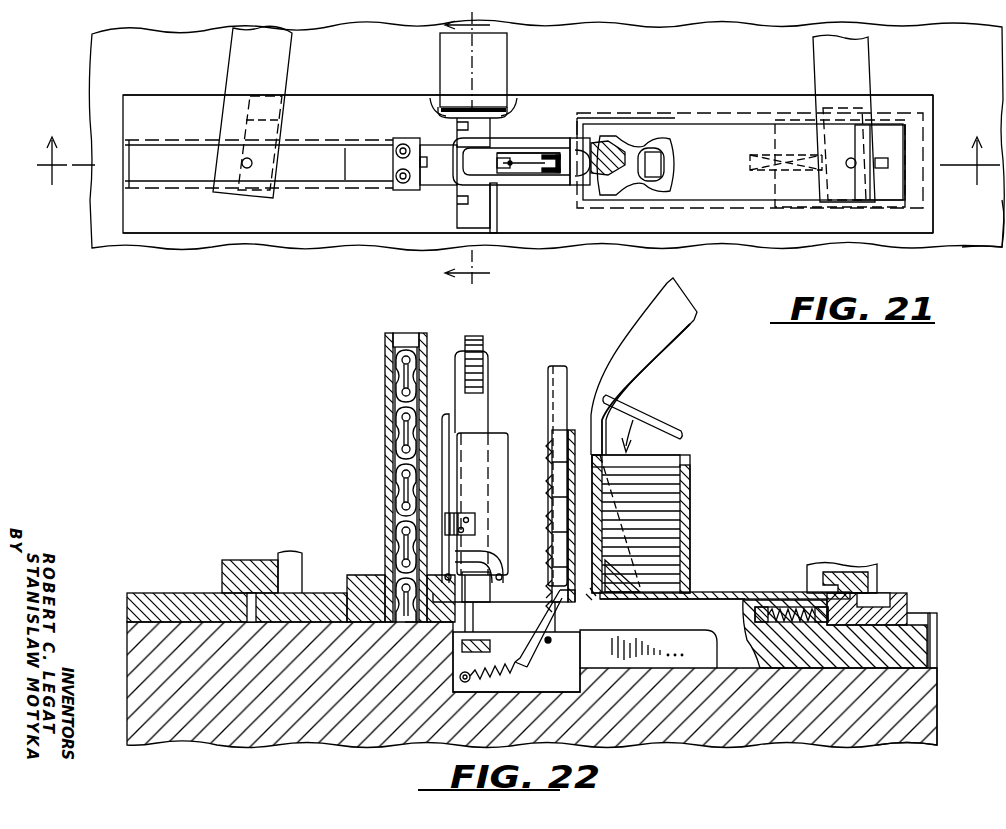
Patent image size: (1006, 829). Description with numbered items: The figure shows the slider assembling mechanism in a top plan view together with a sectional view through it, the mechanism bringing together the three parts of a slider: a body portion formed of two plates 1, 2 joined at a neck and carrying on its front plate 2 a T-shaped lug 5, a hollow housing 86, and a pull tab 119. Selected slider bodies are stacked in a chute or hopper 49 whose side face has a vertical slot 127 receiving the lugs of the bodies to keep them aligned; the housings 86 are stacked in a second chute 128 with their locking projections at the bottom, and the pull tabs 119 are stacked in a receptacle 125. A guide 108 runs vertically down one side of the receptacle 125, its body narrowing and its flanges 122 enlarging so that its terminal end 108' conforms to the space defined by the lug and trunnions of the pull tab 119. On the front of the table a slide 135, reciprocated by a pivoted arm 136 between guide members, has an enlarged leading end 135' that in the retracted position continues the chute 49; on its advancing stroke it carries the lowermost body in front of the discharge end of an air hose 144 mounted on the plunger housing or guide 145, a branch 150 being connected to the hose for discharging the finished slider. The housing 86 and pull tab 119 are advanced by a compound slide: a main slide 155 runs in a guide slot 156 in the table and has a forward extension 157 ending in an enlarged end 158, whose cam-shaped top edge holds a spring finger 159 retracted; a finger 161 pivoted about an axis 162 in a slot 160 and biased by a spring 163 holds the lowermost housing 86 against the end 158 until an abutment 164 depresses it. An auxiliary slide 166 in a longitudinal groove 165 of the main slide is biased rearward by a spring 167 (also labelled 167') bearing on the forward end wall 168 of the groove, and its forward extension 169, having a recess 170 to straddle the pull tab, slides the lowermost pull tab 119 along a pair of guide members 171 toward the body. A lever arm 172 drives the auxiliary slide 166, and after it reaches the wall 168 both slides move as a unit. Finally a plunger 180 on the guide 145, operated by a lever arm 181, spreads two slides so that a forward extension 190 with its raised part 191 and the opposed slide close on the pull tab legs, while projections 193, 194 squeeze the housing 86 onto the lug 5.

In FIG. 22, the plate 1 is at (372, 624).
In FIG. 22, the front plate 2 is at (412, 624).
In FIG. 22, the lug 5 is at (435, 601).
In FIG. 22, the chute 49 is at (387, 341).
In FIG. 21, the housing 86 is at (560, 155).
In FIG. 22, the guide 108 is at (657, 366).
In FIG. 21, the terminal end of guide 108' is at (608, 114).
In FIG. 22, the terminal end of guide 108' is at (634, 537).
In FIG. 21, the pull tab 119 is at (672, 146).
In FIG. 22, the flanges 122 is at (700, 320).
In FIG. 22, the receptacle 125 is at (690, 481).
In FIG. 22, the vertical slot 127 is at (420, 341).
In FIG. 22, the chute 128 is at (562, 368).
In FIG. 21, the slide 135 is at (259, 179).
In FIG. 22, the slide 135 is at (237, 582).
In FIG. 21, the leading end of slide 135' is at (394, 176).
In FIG. 22, the leading end of slide 135' is at (393, 575).
In FIG. 21, the arm 136 is at (283, 48).
In FIG. 22, the arm 136 is at (272, 575).
In FIG. 21, the air hose 144 is at (440, 108).
In FIG. 22, the air hose 144 is at (452, 425).
In FIG. 21, the plunger housing 145 is at (500, 52).
In FIG. 22, the plunger housing 145 is at (497, 445).
In FIG. 21, the branch 150 is at (500, 112).
In FIG. 22, the branch 150 is at (488, 555).
In FIG. 21, the main slide 155 is at (935, 125).
In FIG. 22, the main slide 155 is at (935, 612).
In FIG. 21, the guide slot 156 is at (935, 186).
In FIG. 21, the forward extension 157 is at (585, 140).
In FIG. 22, the forward extension 157 is at (720, 618).
In FIG. 21, the terminal end 158 is at (580, 174).
In FIG. 22, the terminal end 158 is at (578, 604).
In FIG. 22, the spring finger 159 is at (575, 600).
In FIG. 22, the slot 160 is at (576, 676).
In FIG. 21, the finger 161 is at (525, 166).
In FIG. 22, the finger 161 is at (533, 646).
In FIG. 22, the axis 162 is at (551, 643).
In FIG. 22, the spring 163 is at (500, 673).
In FIG. 22, the abutment 164 is at (597, 641).
In FIG. 22, the longitudinal groove 165 is at (790, 600).
In FIG. 21, the auxiliary slide 166 is at (895, 136).
In FIG. 22, the auxiliary slide 166 is at (900, 600).
In FIG. 22, the spring 167 is at (823, 634).
In FIG. 21, the spring 167' is at (815, 163).
In FIG. 22, the forward end wall 168 is at (780, 607).
In FIG. 21, the forward extension 169 is at (718, 136).
In FIG. 22, the forward extension 169 is at (736, 593).
In FIG. 21, the recess 170 is at (640, 118).
In FIG. 22, the guide members 171 is at (505, 605).
In FIG. 21, the lever arm 172 is at (862, 55).
In FIG. 22, the lever arm 172 is at (855, 575).
In FIG. 22, the plunger 180 is at (488, 365).
In FIG. 22, the lever arm 181 is at (473, 340).
In FIG. 22, the forward extension 190 is at (462, 652).
In FIG. 21, the raised part 191 is at (478, 218).
In FIG. 21, the projection 193 is at (455, 126).
In FIG. 21, the projection 194 is at (455, 200).